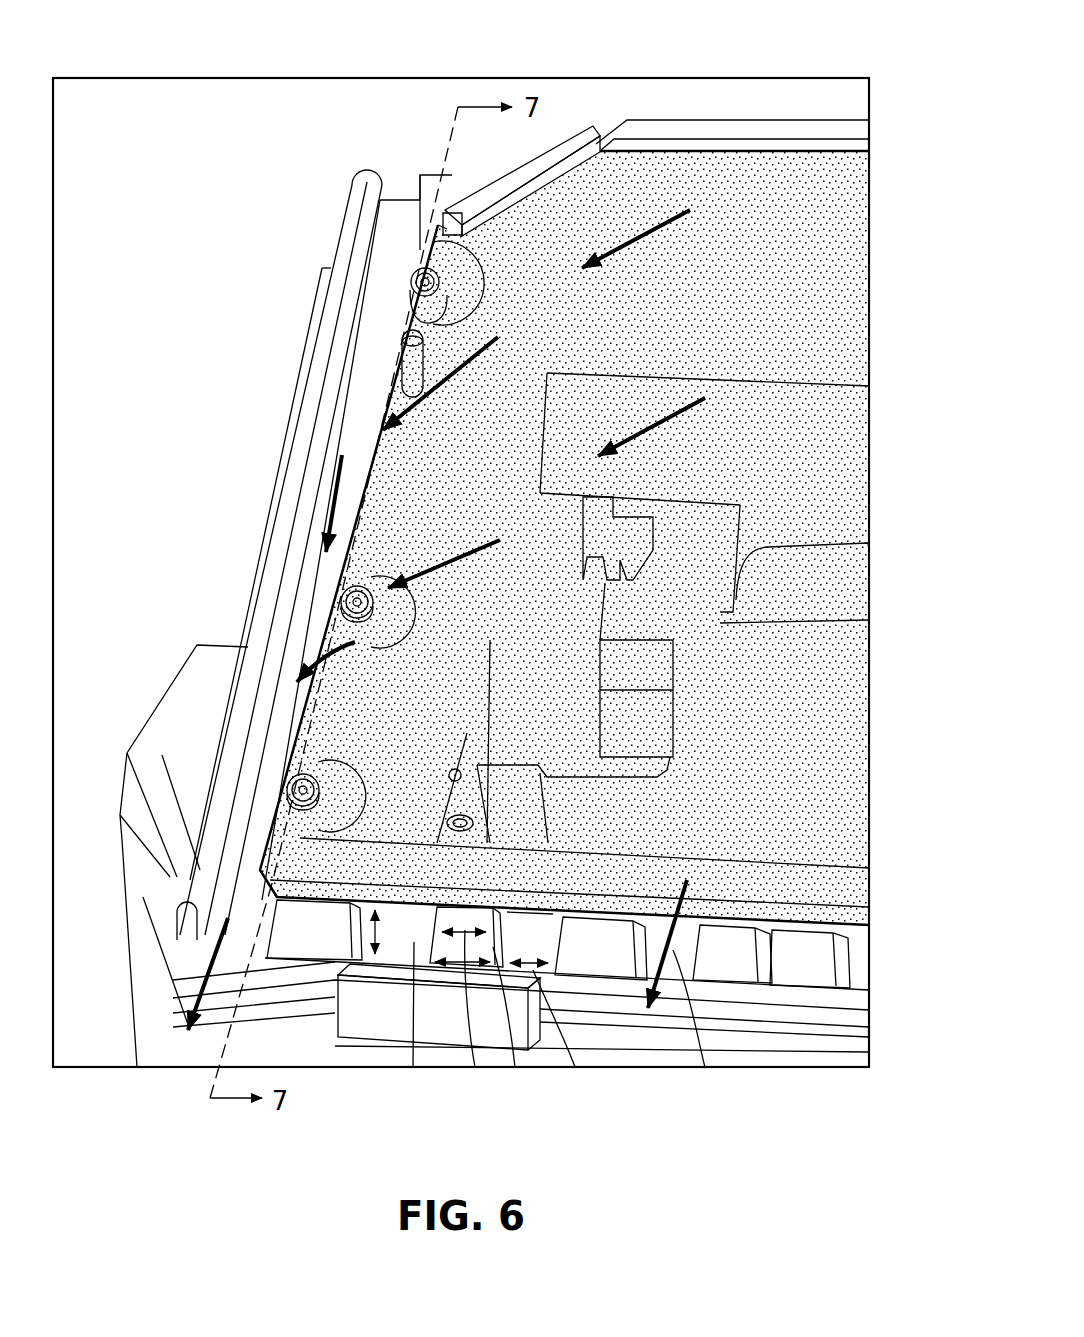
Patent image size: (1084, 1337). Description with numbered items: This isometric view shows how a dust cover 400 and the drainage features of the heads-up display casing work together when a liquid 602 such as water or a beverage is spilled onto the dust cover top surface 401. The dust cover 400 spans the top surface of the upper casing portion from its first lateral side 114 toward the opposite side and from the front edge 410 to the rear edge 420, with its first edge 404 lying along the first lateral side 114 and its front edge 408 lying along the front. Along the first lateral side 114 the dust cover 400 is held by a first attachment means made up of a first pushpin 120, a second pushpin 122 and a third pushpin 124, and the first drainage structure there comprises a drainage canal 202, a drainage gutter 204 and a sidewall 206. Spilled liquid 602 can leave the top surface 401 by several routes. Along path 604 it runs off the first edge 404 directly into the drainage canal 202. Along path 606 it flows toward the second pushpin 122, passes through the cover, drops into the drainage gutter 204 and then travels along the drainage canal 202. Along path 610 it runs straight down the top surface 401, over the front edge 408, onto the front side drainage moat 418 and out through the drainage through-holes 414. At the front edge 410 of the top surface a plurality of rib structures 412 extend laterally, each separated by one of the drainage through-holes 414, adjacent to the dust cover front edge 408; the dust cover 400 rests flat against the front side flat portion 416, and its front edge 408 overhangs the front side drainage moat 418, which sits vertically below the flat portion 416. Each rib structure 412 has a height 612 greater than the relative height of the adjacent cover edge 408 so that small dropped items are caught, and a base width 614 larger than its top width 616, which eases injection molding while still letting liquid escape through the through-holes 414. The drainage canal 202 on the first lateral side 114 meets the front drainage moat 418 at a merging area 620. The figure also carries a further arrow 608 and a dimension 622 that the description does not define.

The dust cover 400 is at (752, 180).
The dust cover top surface 401 is at (764, 296).
The first lateral side 114 is at (322, 163).
The sidewall 206 is at (372, 178).
The drainage canal 202 is at (400, 190).
The rear edge 420 is at (193, 222).
The first pushpin 120 is at (410, 272).
The first edge 404 is at (372, 357).
The second pushpin 122 is at (342, 597).
The third pushpin 124 is at (293, 780).
The path 604 is at (480, 375).
The liquid 602 is at (655, 238).
The path 606 is at (440, 555).
The drainage gutter 204 is at (628, 608).
The merging area 620 is at (256, 910).
The insertion direction 608 is at (200, 1030).
The path 610 is at (668, 905).
The front edge 408 is at (855, 946).
The rib structures 412 is at (290, 952).
The front side flat portion 416 is at (464, 879).
The front side drainage moat 418 is at (776, 961).
The height 612 is at (380, 938).
The front edge 410 is at (883, 982).
The drainage through-holes 414 is at (413, 1067).
The base width 614 is at (475, 1067).
The top width 616 is at (515, 1067).
The leg 622 is at (575, 1067).